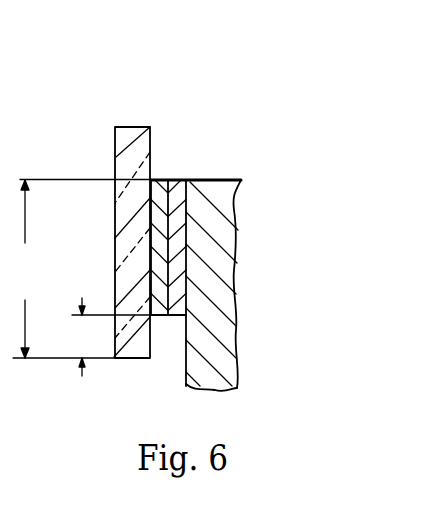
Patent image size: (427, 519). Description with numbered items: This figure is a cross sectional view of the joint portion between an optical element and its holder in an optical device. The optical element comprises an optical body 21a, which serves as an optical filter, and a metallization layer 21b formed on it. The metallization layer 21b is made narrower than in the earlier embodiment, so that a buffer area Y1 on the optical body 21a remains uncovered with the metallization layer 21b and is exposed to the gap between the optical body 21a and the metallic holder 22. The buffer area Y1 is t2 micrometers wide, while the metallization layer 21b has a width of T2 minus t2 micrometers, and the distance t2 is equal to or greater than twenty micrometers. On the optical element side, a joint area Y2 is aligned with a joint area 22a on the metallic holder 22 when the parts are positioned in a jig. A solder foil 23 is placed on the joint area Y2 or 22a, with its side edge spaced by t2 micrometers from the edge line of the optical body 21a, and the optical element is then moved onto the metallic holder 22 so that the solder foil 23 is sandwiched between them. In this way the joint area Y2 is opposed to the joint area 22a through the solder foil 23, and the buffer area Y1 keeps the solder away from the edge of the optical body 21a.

The optical body 21a is at (118, 128).
The metallization layer 21b is at (162, 179).
The metallic holder 22 is at (243, 203).
The joint area 22a is at (178, 179).
The solder foil 23 is at (240, 179).
The width T2 is at (80, 269).
The width of buffer area t2 is at (110, 337).
The buffer area Y1 is at (151, 337).
The joint area Y2 is at (172, 253).